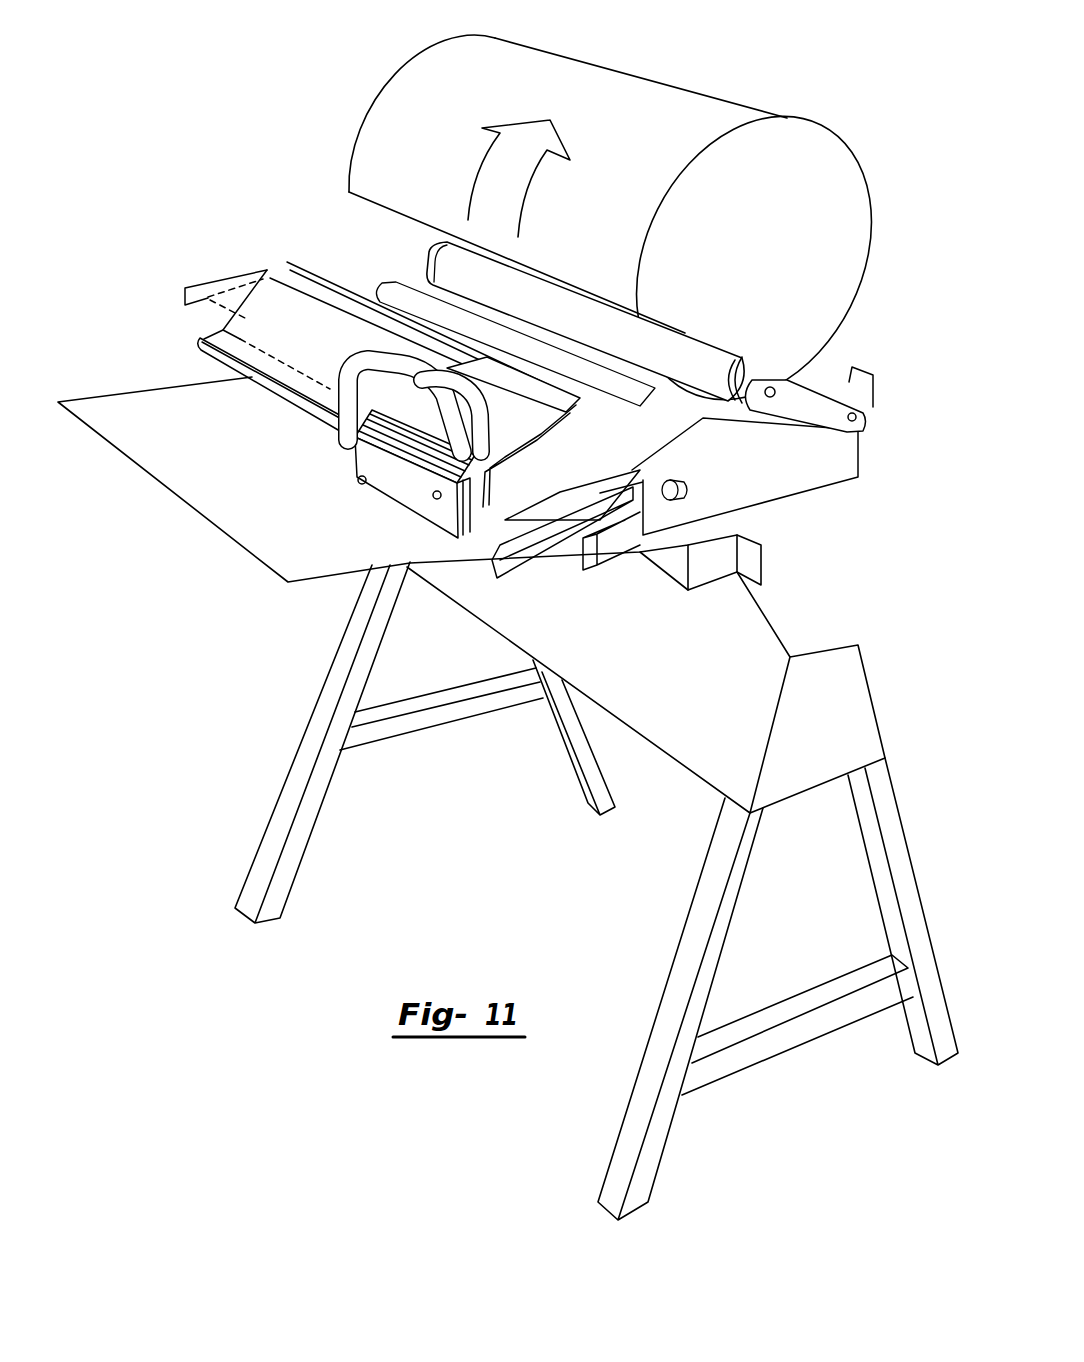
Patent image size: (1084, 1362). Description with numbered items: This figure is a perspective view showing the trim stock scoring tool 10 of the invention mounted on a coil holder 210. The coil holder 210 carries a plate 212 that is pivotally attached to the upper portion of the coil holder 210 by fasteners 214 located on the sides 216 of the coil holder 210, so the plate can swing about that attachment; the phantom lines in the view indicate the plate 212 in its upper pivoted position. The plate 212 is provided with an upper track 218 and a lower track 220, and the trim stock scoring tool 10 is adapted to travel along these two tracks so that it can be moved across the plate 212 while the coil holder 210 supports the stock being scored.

The trim stock scoring tool 10 is at (397, 483).
The coil holder 210 is at (800, 463).
The plate 212 is at (330, 367).
The fasteners 214 is at (686, 492).
The sides 216 is at (757, 472).
The upper track 218 is at (348, 291).
The lower track 220 is at (548, 522).